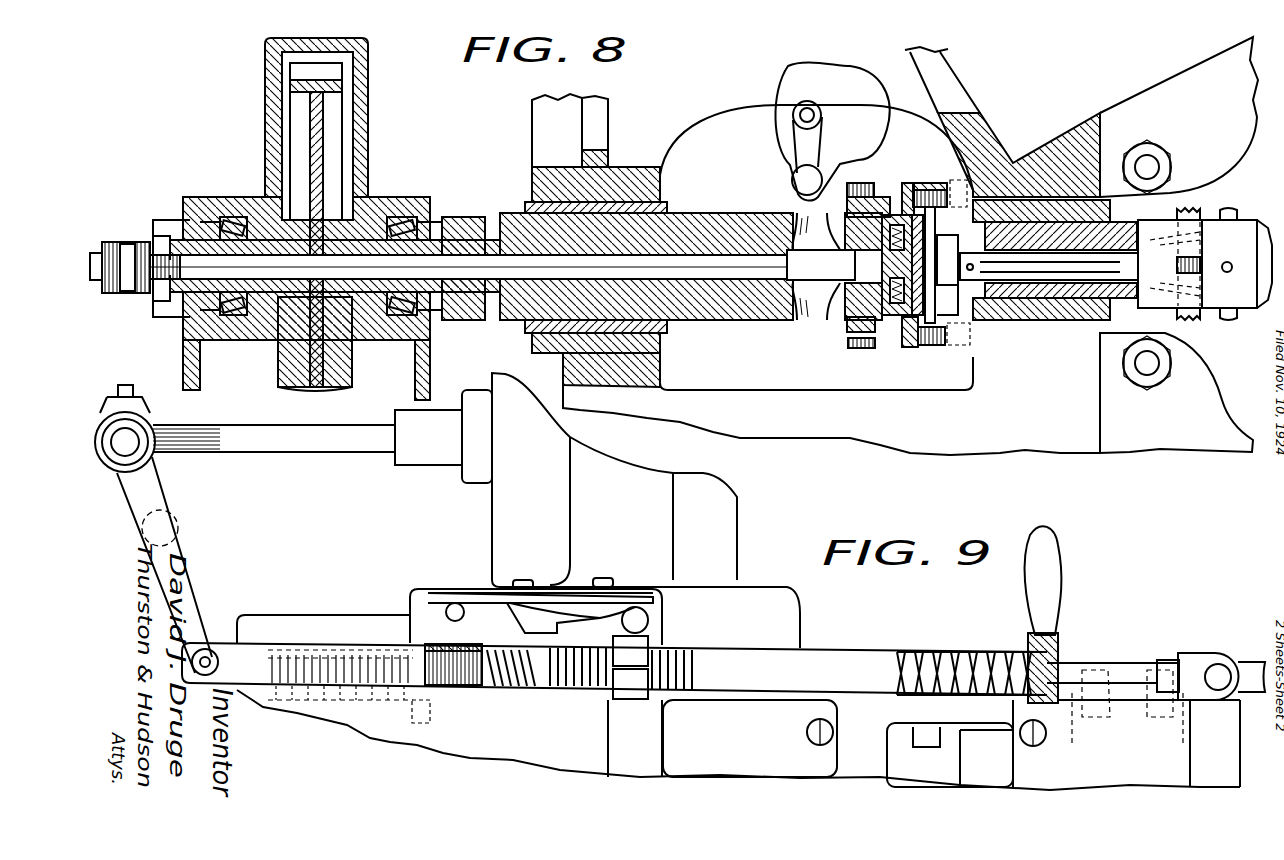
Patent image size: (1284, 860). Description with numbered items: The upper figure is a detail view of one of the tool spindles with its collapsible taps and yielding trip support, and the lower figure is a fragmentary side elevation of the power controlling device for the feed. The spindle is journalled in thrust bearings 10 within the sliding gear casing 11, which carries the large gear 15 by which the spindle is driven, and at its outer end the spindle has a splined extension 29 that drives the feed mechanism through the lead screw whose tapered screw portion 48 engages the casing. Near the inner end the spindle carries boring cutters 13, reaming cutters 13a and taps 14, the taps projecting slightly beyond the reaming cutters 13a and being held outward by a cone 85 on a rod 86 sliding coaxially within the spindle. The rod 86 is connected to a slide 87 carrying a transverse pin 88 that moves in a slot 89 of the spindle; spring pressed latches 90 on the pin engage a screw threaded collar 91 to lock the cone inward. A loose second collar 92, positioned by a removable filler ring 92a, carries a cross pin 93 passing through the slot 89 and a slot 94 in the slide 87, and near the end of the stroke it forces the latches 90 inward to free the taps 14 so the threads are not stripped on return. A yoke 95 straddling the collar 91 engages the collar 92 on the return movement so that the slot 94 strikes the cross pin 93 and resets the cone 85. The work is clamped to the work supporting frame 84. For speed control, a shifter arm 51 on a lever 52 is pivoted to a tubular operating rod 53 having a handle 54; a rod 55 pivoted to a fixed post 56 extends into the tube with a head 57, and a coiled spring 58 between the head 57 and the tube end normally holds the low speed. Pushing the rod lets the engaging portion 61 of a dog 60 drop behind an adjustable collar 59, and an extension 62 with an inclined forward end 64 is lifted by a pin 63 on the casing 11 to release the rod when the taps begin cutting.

In FIG. 8, the thrust bearings 10 is at (415, 215).
In FIG. 8, the gear casing 11 is at (306, 219).
In FIG. 9, the gear casing 11 is at (492, 522).
In FIG. 8, the boring cutters 13 is at (1262, 262).
In FIG. 8, the reaming cutters 13a is at (1239, 263).
In FIG. 8, the taps 14 is at (1188, 320).
In FIG. 8, the large gear 15 is at (323, 130).
In FIG. 9, the splined extension 29 is at (350, 448).
In FIG. 9, the tapered screw portion 48 is at (395, 698).
In FIG. 9, the shifter arm 51 is at (175, 522).
In FIG. 9, the lever 52 is at (167, 490).
In FIG. 9, the tubular operating rod 53 is at (762, 712).
In FIG. 9, the handle 54 is at (1058, 590).
In FIG. 9, the rod 55 is at (1095, 670).
In FIG. 9, the post 56 is at (1208, 735).
In FIG. 9, the head 57 is at (447, 660).
In FIG. 9, the coiled spring 58 is at (575, 690).
In FIG. 9, the collar 59 is at (650, 645).
In FIG. 9, the dog 60 is at (620, 598).
In FIG. 9, the engaging portion 61 is at (650, 615).
In FIG. 9, the extension 62 is at (500, 593).
In FIG. 9, the pin 63 is at (438, 617).
In FIG. 9, the inclined forward end 64 is at (507, 607).
In FIG. 8, the work supporting frame 84 is at (1179, 117).
In FIG. 8, the cone 85 is at (1157, 300).
In FIG. 8, the rod 86 is at (1130, 247).
In FIG. 8, the slide 87 is at (821, 266).
In FIG. 8, the transverse pin 88 is at (880, 335).
In FIG. 8, the slot 89 is at (917, 337).
In FIG. 8, the spring pressed latches 90 is at (902, 317).
In FIG. 8, the collar 91 is at (848, 330).
In FIG. 8, the second collar 92 is at (929, 207).
In FIG. 8, the filler ring 92a is at (960, 345).
In FIG. 8, the cross pin 93 is at (947, 300).
In FIG. 8, the slot 94 is at (948, 247).
In FIG. 8, the yoke 95 is at (848, 172).